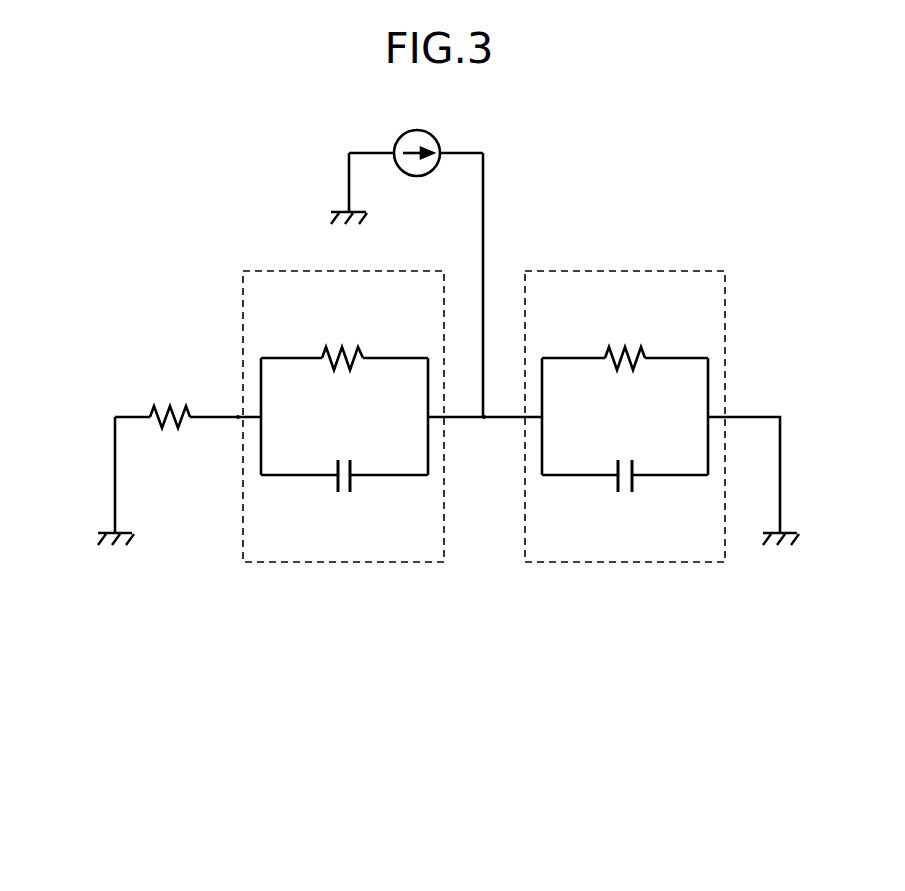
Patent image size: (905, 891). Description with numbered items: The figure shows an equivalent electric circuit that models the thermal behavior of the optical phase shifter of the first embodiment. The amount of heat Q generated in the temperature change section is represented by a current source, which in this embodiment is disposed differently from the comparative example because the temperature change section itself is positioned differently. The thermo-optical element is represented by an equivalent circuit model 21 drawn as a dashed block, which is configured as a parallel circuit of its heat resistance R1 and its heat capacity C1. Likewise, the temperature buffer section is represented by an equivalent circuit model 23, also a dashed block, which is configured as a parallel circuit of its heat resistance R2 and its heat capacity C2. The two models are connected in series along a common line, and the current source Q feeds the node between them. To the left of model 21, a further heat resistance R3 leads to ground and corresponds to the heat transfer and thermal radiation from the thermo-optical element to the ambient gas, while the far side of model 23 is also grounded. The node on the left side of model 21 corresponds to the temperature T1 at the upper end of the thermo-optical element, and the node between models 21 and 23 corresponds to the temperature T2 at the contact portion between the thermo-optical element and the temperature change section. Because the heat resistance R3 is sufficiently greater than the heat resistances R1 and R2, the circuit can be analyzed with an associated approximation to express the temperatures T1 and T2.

The amount of heat Q is at (416, 153).
The heat resistance R3 is at (170, 397).
The equivalent circuit model 21 is at (274, 271).
The equivalent circuit model 23 is at (624, 271).
The heat resistance R1 is at (342, 340).
The heat capacity C1 is at (343, 495).
The heat resistance R2 is at (625, 340).
The heat capacity C2 is at (624, 495).
The temperature T1 is at (238, 419).
The temperature T2 is at (484, 419).